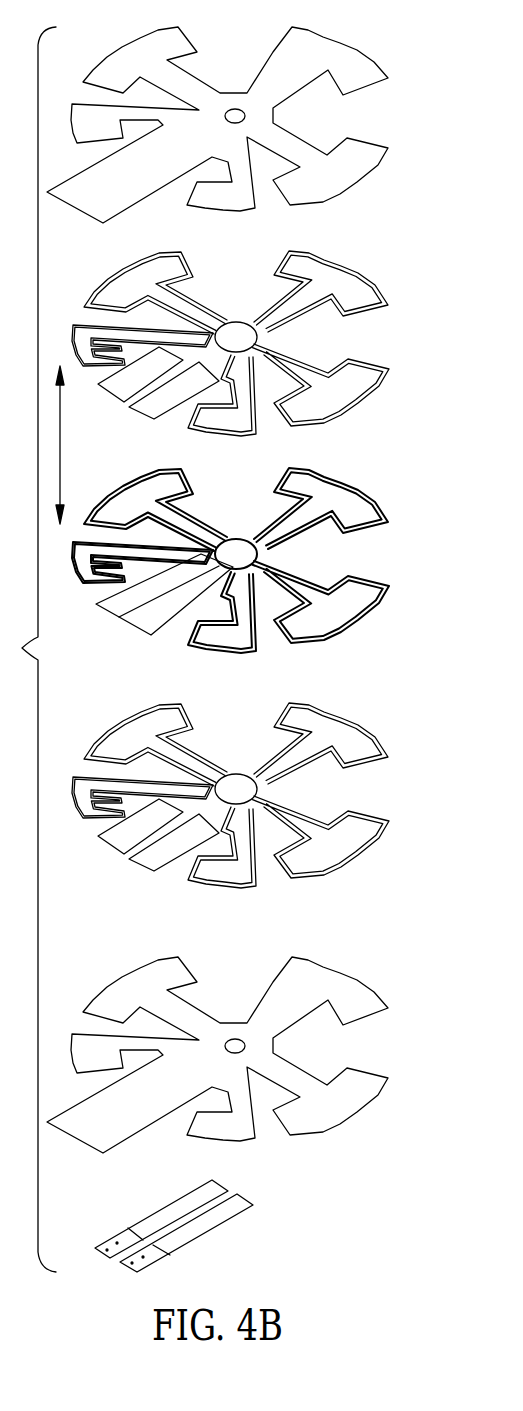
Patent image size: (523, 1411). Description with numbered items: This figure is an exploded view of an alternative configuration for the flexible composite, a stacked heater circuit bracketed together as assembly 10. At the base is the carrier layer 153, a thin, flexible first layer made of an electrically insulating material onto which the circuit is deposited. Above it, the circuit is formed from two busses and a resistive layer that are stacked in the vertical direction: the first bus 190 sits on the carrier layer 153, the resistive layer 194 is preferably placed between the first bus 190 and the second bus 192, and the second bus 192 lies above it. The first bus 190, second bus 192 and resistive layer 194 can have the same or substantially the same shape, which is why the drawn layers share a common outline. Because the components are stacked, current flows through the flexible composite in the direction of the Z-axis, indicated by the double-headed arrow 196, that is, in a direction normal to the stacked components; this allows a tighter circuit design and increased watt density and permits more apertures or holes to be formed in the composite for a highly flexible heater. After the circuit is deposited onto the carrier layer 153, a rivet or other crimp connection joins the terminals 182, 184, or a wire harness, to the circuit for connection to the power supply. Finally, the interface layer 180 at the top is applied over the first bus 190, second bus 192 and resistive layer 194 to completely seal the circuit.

The sensor stack 10 is at (28, 649).
The interface layer 180 is at (350, 50).
The second bus 192 is at (350, 272).
The resistive layer 194 is at (350, 492).
The first bus 190 is at (350, 725).
The carrier layer 153 is at (350, 977).
The Z-axis direction 196 is at (62, 446).
The terminal 182 is at (203, 1188).
The terminal 184 is at (247, 1200).